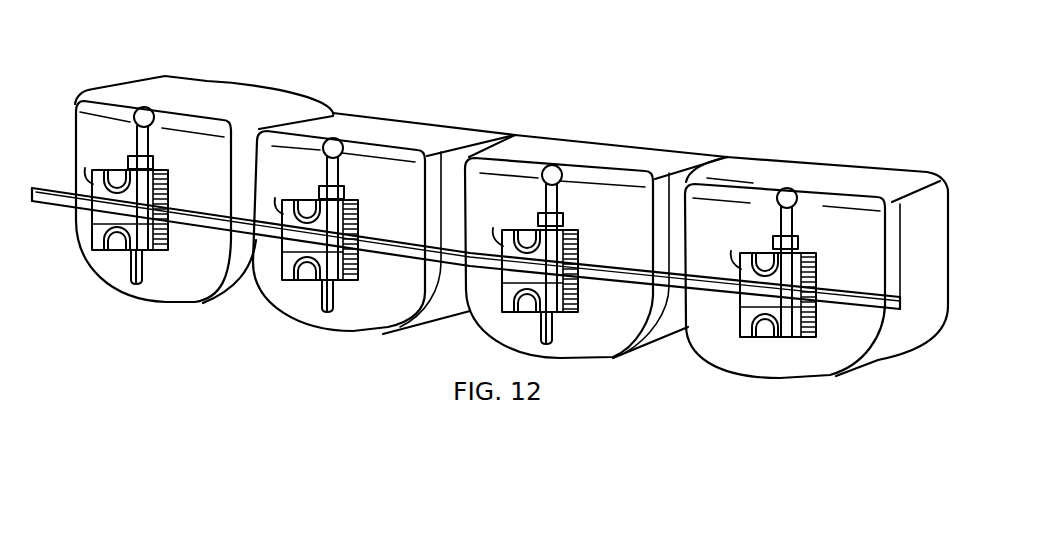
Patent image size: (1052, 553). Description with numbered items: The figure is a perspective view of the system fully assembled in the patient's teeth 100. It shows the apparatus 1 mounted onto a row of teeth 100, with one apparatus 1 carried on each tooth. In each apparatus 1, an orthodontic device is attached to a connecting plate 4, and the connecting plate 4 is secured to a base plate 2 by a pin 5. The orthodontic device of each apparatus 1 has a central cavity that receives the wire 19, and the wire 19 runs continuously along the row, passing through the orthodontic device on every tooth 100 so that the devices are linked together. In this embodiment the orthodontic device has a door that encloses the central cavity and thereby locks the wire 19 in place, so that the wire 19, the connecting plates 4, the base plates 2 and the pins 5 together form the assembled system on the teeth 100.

The patient's teeth 100 is at (238, 94).
The apparatus 1 is at (112, 271).
The base plate 2 is at (172, 191).
The connecting plate 4 is at (413, 203).
The pin 5 is at (152, 111).
The wire 19 is at (185, 231).